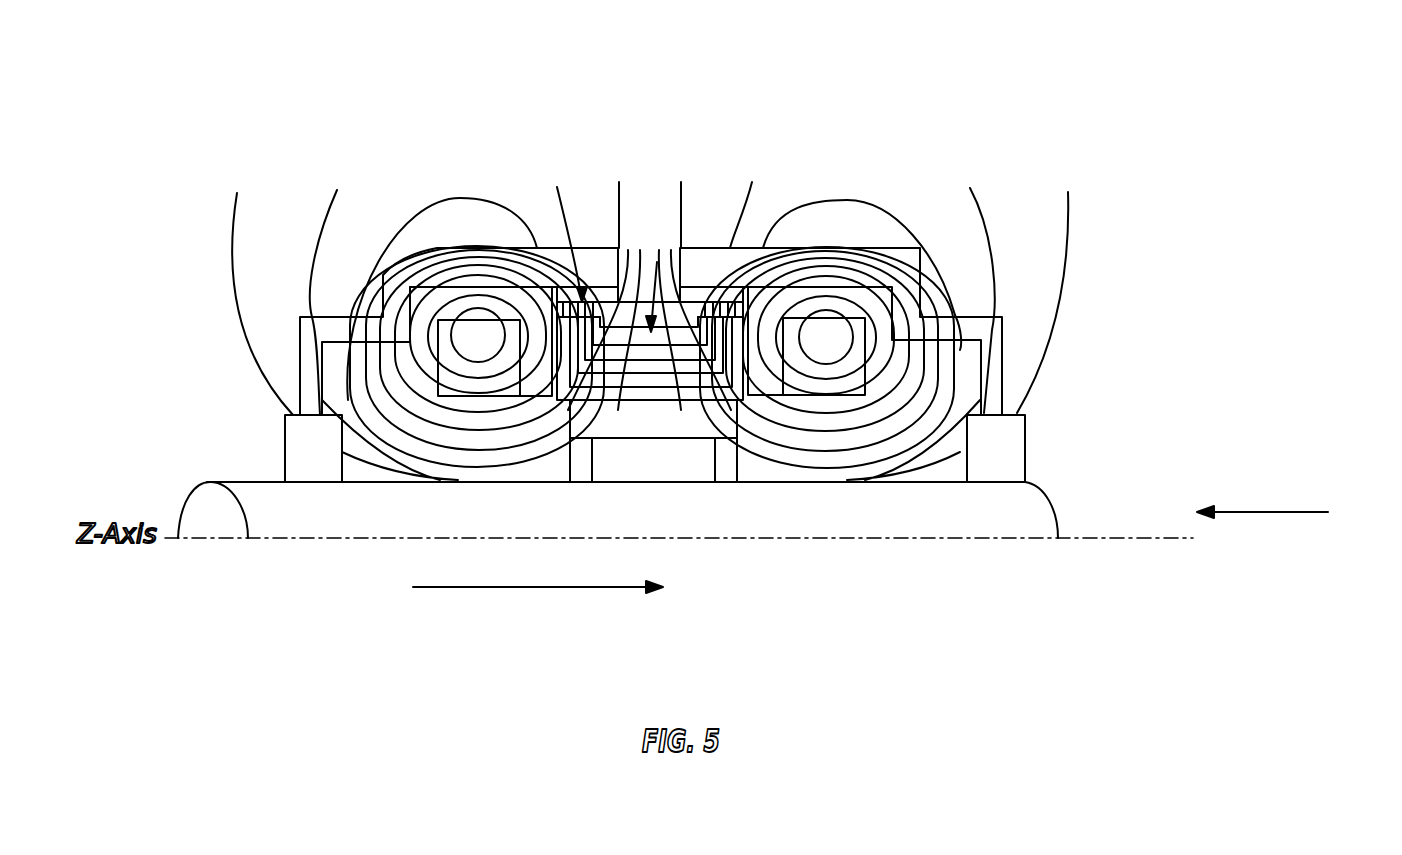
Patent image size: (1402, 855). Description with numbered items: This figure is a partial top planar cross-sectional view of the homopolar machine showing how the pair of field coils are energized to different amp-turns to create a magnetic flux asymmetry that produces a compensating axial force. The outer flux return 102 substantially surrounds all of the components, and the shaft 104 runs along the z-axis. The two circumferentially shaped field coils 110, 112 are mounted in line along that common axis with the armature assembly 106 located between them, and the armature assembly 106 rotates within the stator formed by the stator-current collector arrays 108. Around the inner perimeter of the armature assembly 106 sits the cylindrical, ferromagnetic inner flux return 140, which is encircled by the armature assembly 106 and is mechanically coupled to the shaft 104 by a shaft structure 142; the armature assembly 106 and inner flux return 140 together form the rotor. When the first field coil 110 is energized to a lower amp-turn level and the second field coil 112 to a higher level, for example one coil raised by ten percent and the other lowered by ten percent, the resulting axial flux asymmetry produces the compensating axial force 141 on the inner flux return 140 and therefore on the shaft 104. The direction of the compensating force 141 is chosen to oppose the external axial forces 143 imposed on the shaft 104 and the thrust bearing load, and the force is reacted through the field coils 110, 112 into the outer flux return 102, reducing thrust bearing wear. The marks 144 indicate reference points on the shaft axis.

The outer flux return 102 is at (992, 327).
The shaft 104 is at (203, 495).
The armature assembly 106 is at (657, 262).
The stator-current collector arrays 108 is at (577, 262).
The first field coil 110 is at (467, 330).
The second field coil 112 is at (826, 327).
The inner flux return 140 is at (655, 430).
The shaft structure 142 is at (723, 443).
The compensating axial force 141 is at (548, 588).
The external axial forces 143 is at (1270, 510).
The shaft axis reference points 144 is at (285, 540).